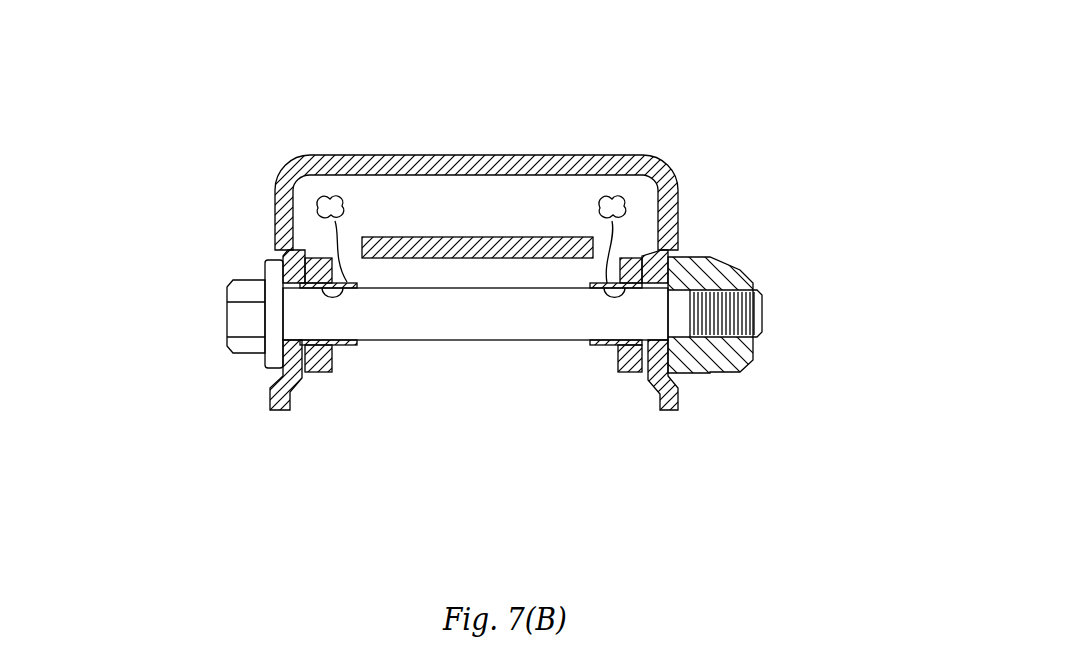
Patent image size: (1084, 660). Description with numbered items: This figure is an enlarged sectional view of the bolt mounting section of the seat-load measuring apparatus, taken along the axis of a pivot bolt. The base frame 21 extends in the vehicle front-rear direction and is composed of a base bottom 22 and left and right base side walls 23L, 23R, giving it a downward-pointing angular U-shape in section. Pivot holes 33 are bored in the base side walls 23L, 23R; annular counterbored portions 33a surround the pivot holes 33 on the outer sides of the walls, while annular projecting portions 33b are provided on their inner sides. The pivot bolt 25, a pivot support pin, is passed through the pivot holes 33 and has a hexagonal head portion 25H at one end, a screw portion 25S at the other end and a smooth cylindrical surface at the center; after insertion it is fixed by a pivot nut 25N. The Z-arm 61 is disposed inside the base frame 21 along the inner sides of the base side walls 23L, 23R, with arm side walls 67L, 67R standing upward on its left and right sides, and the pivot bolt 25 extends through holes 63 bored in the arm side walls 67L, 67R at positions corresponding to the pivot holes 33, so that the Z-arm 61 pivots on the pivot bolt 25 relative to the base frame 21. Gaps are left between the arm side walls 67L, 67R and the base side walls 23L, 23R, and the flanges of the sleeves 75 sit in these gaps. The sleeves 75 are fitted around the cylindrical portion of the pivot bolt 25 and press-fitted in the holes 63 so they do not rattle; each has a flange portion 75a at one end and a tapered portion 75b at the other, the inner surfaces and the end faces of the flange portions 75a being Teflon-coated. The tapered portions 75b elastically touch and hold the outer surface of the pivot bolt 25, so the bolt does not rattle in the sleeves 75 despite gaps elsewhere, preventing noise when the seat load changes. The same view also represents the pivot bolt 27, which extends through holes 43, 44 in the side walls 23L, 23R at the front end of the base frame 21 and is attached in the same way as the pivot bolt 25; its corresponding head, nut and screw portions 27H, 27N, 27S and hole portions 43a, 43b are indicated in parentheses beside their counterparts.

The base frame 21 is at (466, 145).
The base bottom 22 is at (584, 152).
The left base side wall 23L is at (272, 207).
The right base side wall 23R is at (680, 177).
The pivot bolt 25 is at (478, 342).
The hexagonal head portion 25H is at (228, 320).
The pivot nut 25N is at (740, 368).
The screw portion 25S is at (762, 310).
The pivot bolt 27 is at (486, 381).
The shaft head 27H is at (166, 326).
The shaft nut 27N is at (776, 341).
The shaft threaded portion 27S is at (809, 318).
The pivot holes 33 is at (456, 362).
The annular counterbored portions 33a is at (270, 270).
The annular projecting portions 33b is at (298, 376).
The hole 43 is at (456, 362).
The upper portion of support bracket 43a is at (456, 237).
The lower portion of support bracket 43b is at (465, 436).
The hole 44 is at (456, 362).
The Z-arm 61 is at (488, 236).
The holes 63 is at (471, 244).
The left arm side wall 67L is at (365, 395).
The right arm side wall 67R is at (627, 373).
The sleeves 75 is at (462, 395).
The flange portions 75a is at (308, 372).
The tapered portions 75b is at (357, 348).